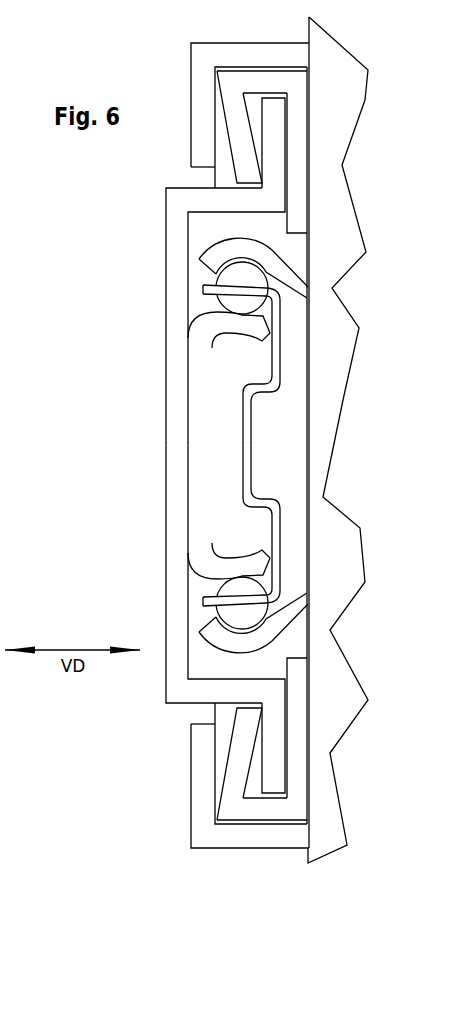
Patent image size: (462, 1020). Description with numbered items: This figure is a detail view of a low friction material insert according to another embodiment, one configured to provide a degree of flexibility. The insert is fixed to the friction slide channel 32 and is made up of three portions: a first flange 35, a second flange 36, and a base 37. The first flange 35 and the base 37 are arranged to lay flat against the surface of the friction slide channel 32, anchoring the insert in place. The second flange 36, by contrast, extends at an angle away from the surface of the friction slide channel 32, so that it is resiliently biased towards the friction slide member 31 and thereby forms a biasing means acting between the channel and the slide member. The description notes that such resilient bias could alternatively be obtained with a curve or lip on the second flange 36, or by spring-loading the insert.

The friction slide member 31 is at (274, 717).
The friction slide channel 32 is at (213, 804).
The first flange 35 is at (299, 724).
The second flange 36 is at (241, 736).
The base 37 is at (276, 810).